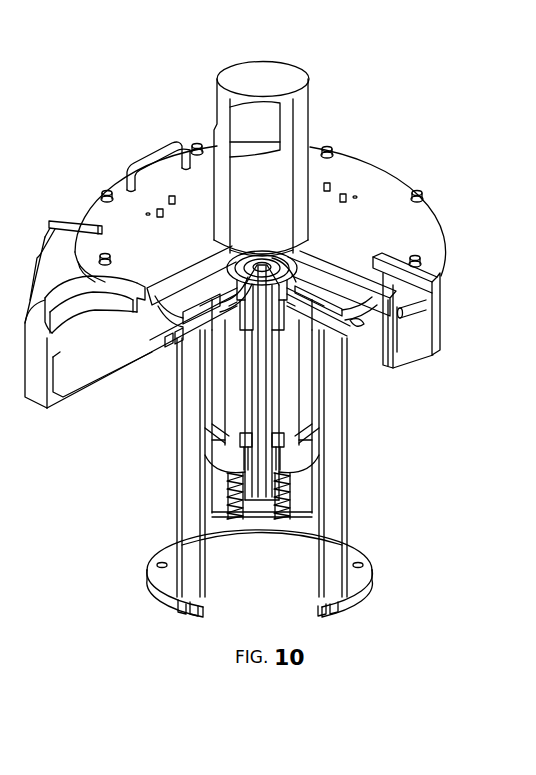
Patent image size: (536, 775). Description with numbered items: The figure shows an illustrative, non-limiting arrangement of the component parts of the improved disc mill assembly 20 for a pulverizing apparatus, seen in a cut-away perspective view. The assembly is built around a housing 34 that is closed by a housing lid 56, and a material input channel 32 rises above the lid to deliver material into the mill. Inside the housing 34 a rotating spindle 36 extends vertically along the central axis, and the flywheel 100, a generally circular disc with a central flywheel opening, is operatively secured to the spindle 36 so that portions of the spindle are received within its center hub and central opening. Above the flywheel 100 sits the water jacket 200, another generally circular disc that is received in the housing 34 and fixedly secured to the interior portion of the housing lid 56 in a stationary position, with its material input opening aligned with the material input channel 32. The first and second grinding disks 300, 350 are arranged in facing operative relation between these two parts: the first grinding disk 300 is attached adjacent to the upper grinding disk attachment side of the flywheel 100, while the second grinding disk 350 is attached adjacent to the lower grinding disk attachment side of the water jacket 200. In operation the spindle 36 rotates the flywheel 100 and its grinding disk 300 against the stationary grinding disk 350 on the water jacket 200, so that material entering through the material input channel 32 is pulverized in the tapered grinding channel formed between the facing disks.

The disc mill assembly 20 is at (104, 84).
The material input channel 32 is at (281, 61).
The housing lid 56 is at (377, 180).
The first grinding disk 300 is at (205, 305).
The second grinding disk 350 is at (95, 304).
The water jacket 200 is at (318, 288).
The flywheel 100 is at (329, 334).
The housing 34 is at (402, 337).
The spindle 36 is at (253, 353).